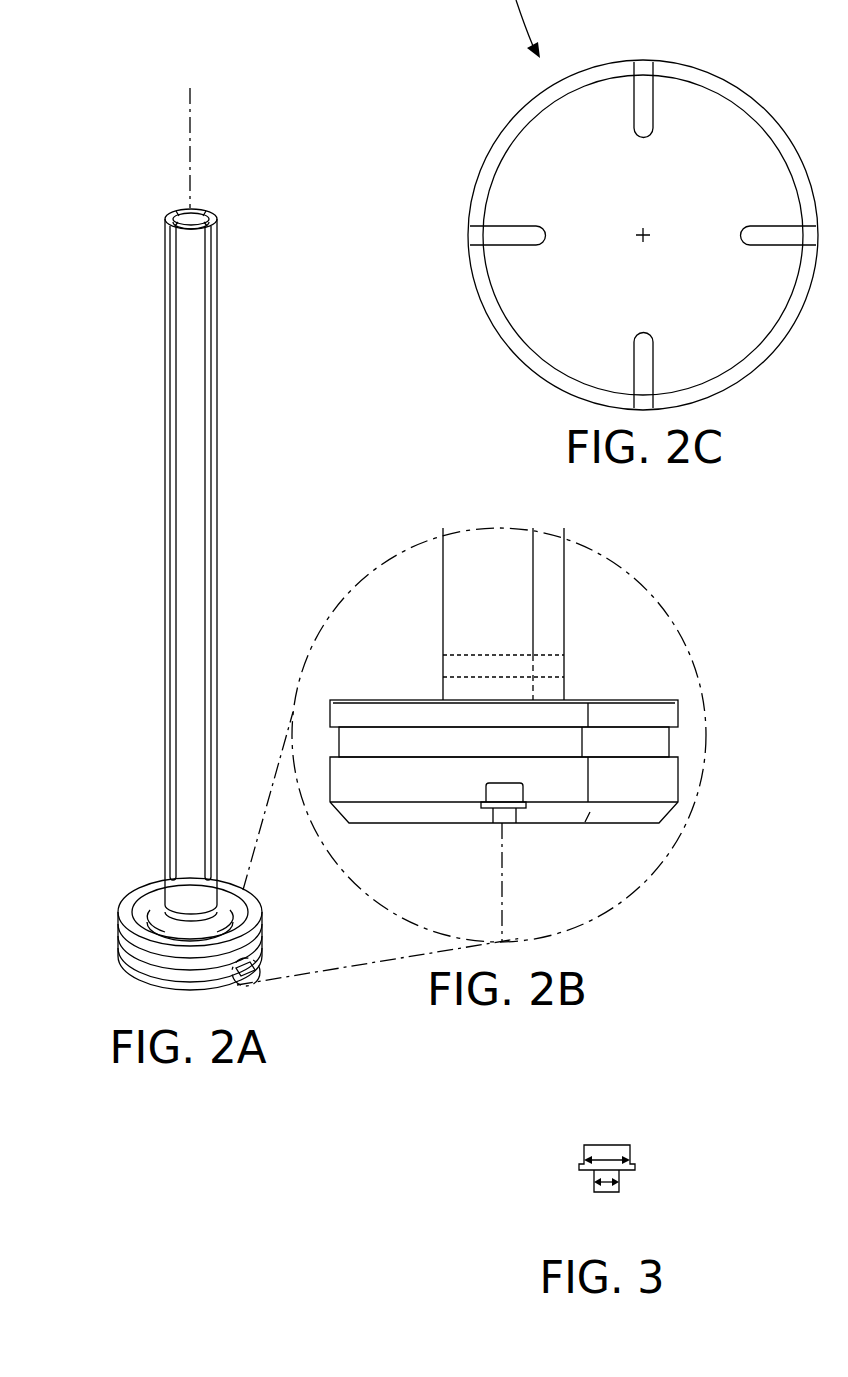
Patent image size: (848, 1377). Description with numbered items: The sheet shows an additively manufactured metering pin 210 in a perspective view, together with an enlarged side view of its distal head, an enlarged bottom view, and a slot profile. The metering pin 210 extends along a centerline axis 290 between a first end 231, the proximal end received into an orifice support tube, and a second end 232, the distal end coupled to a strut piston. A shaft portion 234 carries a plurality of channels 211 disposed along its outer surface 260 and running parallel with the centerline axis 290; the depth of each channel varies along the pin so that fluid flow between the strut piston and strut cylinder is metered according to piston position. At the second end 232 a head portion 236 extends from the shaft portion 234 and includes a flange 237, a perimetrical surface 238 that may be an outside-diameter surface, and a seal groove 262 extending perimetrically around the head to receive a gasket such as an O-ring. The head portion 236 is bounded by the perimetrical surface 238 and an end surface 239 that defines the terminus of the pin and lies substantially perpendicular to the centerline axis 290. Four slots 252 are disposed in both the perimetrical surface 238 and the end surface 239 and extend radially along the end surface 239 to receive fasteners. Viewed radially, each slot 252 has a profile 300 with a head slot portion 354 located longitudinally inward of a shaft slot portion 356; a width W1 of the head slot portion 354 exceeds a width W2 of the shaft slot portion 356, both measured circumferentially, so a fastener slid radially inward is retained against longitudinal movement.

In FIG. 2A, the centerline axis 290 is at (190, 111).
In FIG. 2B, the centerline axis 290 is at (502, 908).
In FIG. 2C, the centerline axis 290 is at (641, 232).
In FIG. 2A, the metering pin 210 is at (168, 226).
In FIG. 2A, the first end 231 is at (246, 210).
In FIG. 2A, the shaft portion 234 is at (188, 373).
In FIG. 2B, the shaft portion 234 is at (455, 617).
In FIG. 2A, the outer surface 260 is at (200, 410).
In FIG. 2A, the channels 211 is at (170, 475).
In FIG. 2A, the second end 232 is at (100, 872).
In FIG. 2B, the second end 232 is at (576, 850).
In FIG. 2A, the head portion 236 is at (128, 918).
In FIG. 2B, the head portion 236 is at (648, 712).
In FIG. 2B, the flange 237 is at (388, 700).
In FIG. 2B, the perimetrical surface 238 is at (330, 718).
In FIG. 2C, the perimetrical surface 238 is at (497, 142).
In FIG. 2B, the seal groove 262 is at (588, 725).
In FIG. 2A, the slots 252 is at (246, 972).
In FIG. 2B, the slots 252 is at (486, 790).
In FIG. 2C, the slots 252 is at (633, 131).
In FIG. 2B, the end surface 239 is at (428, 824).
In FIG. 2C, the end surface 239 is at (721, 162).
In FIG. 3, the profile 300 is at (668, 1098).
In FIG. 3, the head slot portion 354 is at (584, 1150).
In FIG. 3, the shaft slot portion 356 is at (595, 1190).
In FIG. 3, the width of head slot portion W1 is at (606, 1160).
In FIG. 3, the width of shaft slot portion W2 is at (606, 1192).